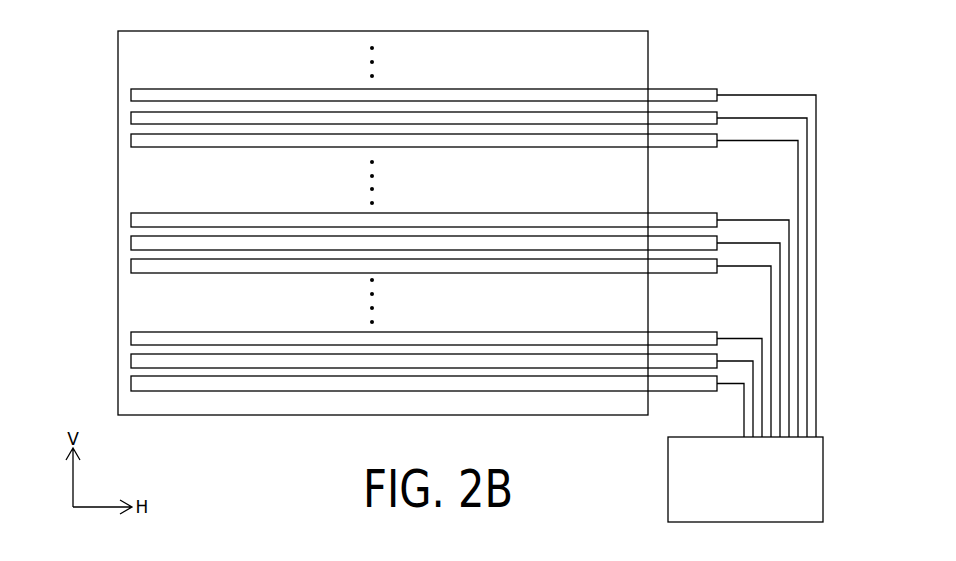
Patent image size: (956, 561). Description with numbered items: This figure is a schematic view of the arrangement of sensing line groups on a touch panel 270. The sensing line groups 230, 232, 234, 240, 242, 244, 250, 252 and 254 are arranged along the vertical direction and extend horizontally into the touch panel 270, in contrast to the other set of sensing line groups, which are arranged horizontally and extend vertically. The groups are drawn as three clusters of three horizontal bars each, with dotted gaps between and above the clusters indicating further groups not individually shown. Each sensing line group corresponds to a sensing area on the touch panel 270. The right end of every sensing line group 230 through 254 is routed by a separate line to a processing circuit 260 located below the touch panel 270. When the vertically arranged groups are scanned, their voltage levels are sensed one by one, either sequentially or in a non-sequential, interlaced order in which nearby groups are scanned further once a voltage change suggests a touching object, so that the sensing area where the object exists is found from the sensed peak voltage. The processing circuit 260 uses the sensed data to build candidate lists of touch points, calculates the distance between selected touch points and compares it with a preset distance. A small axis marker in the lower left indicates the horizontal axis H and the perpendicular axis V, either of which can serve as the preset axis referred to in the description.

The sensing line group 230 is at (131, 95).
The sensing line group 232 is at (131, 118).
The sensing line group 234 is at (131, 141).
The sensing line group 240 is at (131, 220).
The sensing line group 242 is at (131, 243).
The sensing line group 244 is at (131, 266).
The sensing line group 250 is at (131, 338).
The sensing line group 252 is at (131, 361).
The sensing line group 254 is at (131, 384).
The processing circuit 260 is at (668, 483).
The touch panel 270 is at (648, 52).